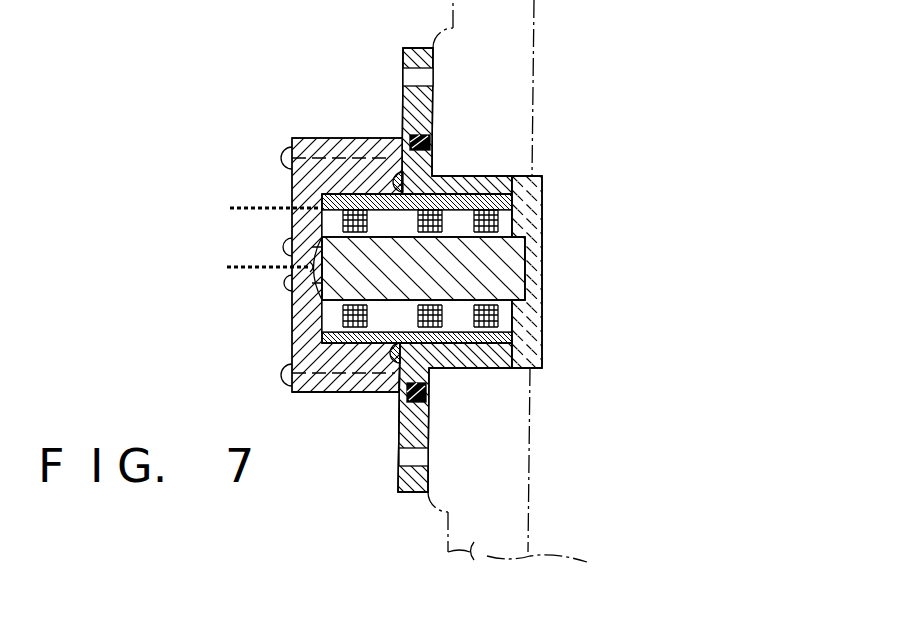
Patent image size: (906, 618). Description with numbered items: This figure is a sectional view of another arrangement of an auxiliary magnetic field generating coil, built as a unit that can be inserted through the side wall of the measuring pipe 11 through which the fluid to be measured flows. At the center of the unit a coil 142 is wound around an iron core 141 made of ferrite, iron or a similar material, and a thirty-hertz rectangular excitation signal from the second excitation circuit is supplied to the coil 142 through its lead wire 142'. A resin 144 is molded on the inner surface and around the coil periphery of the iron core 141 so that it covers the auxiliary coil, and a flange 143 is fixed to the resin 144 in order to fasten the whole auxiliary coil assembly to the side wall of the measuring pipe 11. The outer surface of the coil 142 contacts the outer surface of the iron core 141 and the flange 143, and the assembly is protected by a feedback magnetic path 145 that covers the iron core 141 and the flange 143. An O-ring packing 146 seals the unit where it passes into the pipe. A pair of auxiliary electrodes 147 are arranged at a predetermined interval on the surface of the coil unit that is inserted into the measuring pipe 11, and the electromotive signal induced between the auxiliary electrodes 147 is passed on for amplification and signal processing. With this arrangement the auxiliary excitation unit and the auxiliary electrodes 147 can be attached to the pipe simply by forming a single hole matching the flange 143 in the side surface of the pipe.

The measuring pipe 11 is at (471, 556).
The iron core 141 is at (520, 275).
The coil 142 is at (443, 265).
The lead wire 142' is at (270, 214).
The flange 143 is at (403, 56).
The resin 144 is at (542, 195).
The feedback magnetic path 145 is at (341, 393).
The O-ring packing 146 is at (433, 141).
The auxiliary electrodes 147 is at (523, 232).